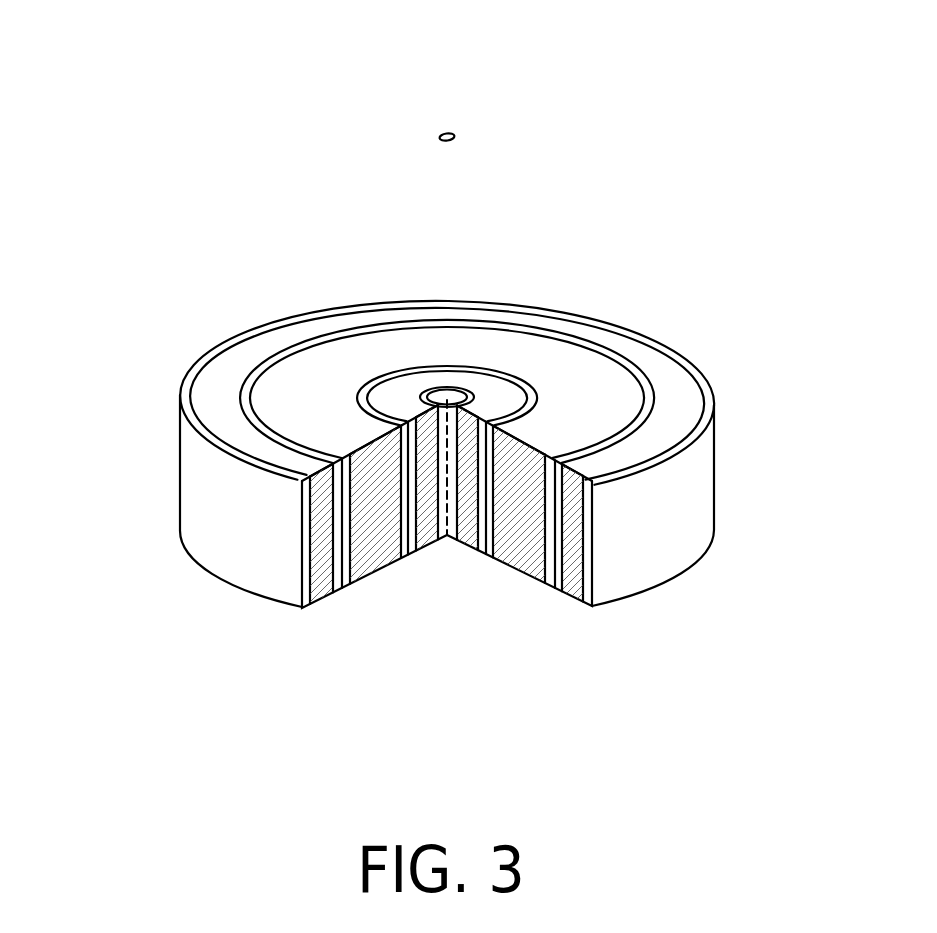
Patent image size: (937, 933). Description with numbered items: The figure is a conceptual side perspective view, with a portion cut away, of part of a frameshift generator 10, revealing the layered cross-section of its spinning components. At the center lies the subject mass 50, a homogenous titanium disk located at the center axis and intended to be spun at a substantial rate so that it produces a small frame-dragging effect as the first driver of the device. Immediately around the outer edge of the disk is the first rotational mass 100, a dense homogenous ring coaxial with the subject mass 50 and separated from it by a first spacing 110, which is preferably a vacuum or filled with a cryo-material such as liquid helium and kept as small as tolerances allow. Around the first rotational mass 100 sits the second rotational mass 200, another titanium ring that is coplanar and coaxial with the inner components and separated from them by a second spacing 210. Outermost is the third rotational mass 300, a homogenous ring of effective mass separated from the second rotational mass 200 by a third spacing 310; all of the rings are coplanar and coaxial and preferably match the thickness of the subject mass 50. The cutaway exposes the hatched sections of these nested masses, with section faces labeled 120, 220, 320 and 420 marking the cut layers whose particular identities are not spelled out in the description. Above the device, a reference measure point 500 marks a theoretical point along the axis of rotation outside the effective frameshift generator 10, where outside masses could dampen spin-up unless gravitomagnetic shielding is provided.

The frameshift generator 10 is at (119, 60).
The reference measure point 500 is at (460, 133).
The subject mass 50 is at (453, 398).
The first rotational mass 100 is at (525, 395).
The first spacing 110 is at (508, 402).
The core 120 is at (447, 533).
The second rotational mass 200 is at (657, 398).
The second spacing 210 is at (615, 393).
The inner hatched layer 220 is at (468, 533).
The third rotational mass 300 is at (690, 437).
The third spacing 310 is at (670, 425).
The middle hatched layer 320 is at (508, 553).
The outer hatched layer 420 is at (575, 582).